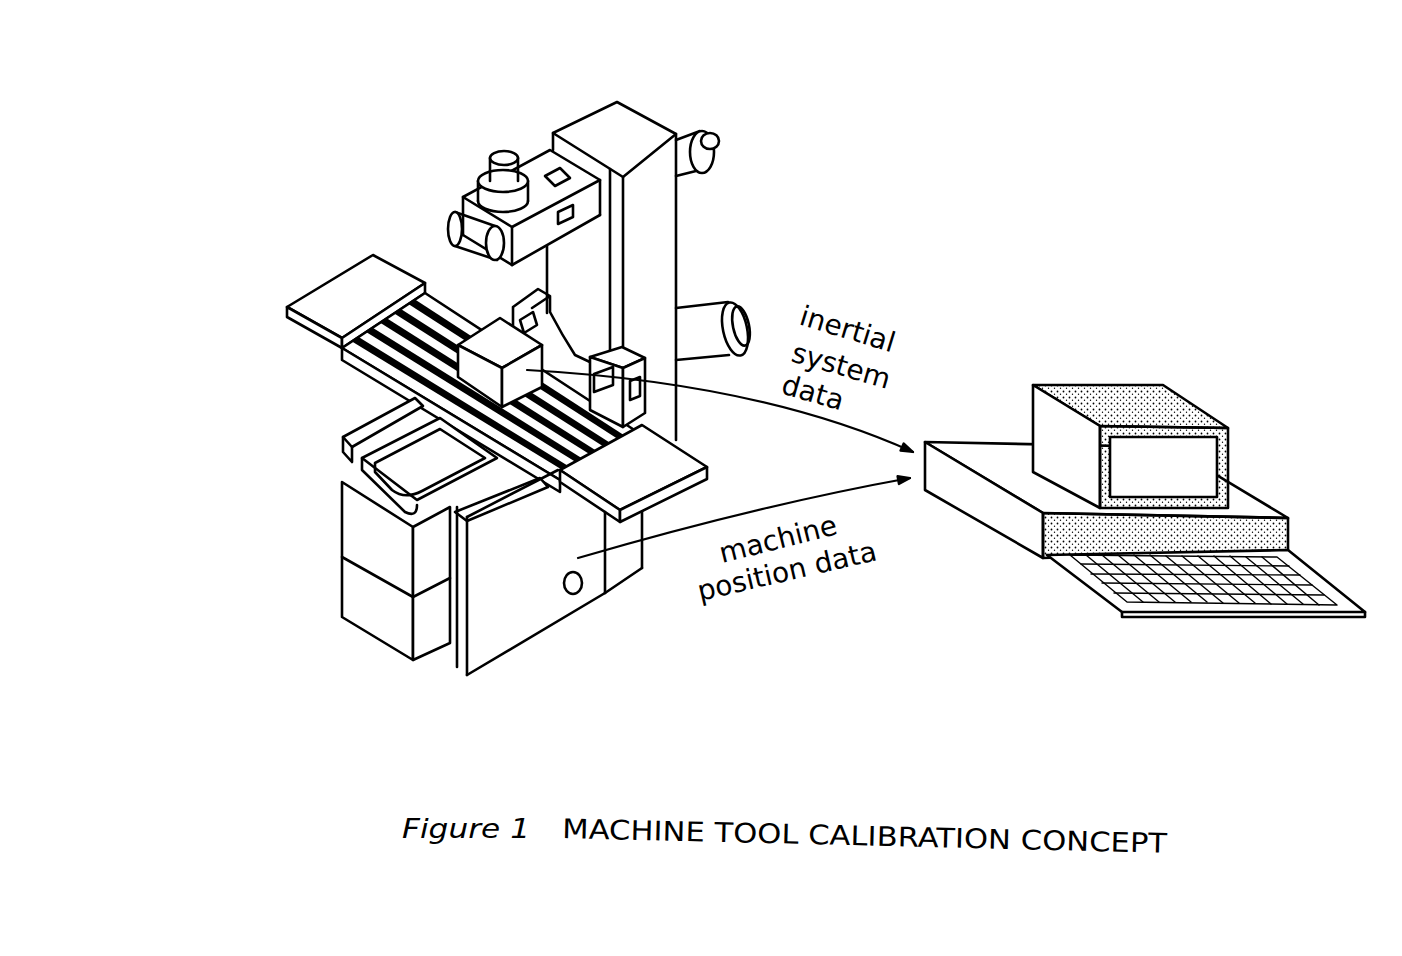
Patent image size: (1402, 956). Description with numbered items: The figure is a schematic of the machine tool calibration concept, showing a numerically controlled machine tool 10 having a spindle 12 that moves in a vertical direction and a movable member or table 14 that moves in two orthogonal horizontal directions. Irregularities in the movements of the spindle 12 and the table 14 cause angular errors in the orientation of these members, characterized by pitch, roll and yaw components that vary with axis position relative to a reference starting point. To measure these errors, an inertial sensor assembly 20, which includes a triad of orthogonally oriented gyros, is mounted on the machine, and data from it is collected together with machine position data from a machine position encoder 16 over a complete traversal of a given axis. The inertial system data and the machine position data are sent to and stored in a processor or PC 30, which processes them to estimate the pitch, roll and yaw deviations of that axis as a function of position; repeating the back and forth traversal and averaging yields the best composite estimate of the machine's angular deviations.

The numerically controlled machine tool 10 is at (466, 414).
The spindle 12 is at (466, 172).
The table 14 is at (332, 258).
The machine position encoder 16 is at (567, 470).
The inertial sensor assembly 20 is at (457, 368).
The PC 30 is at (1145, 408).